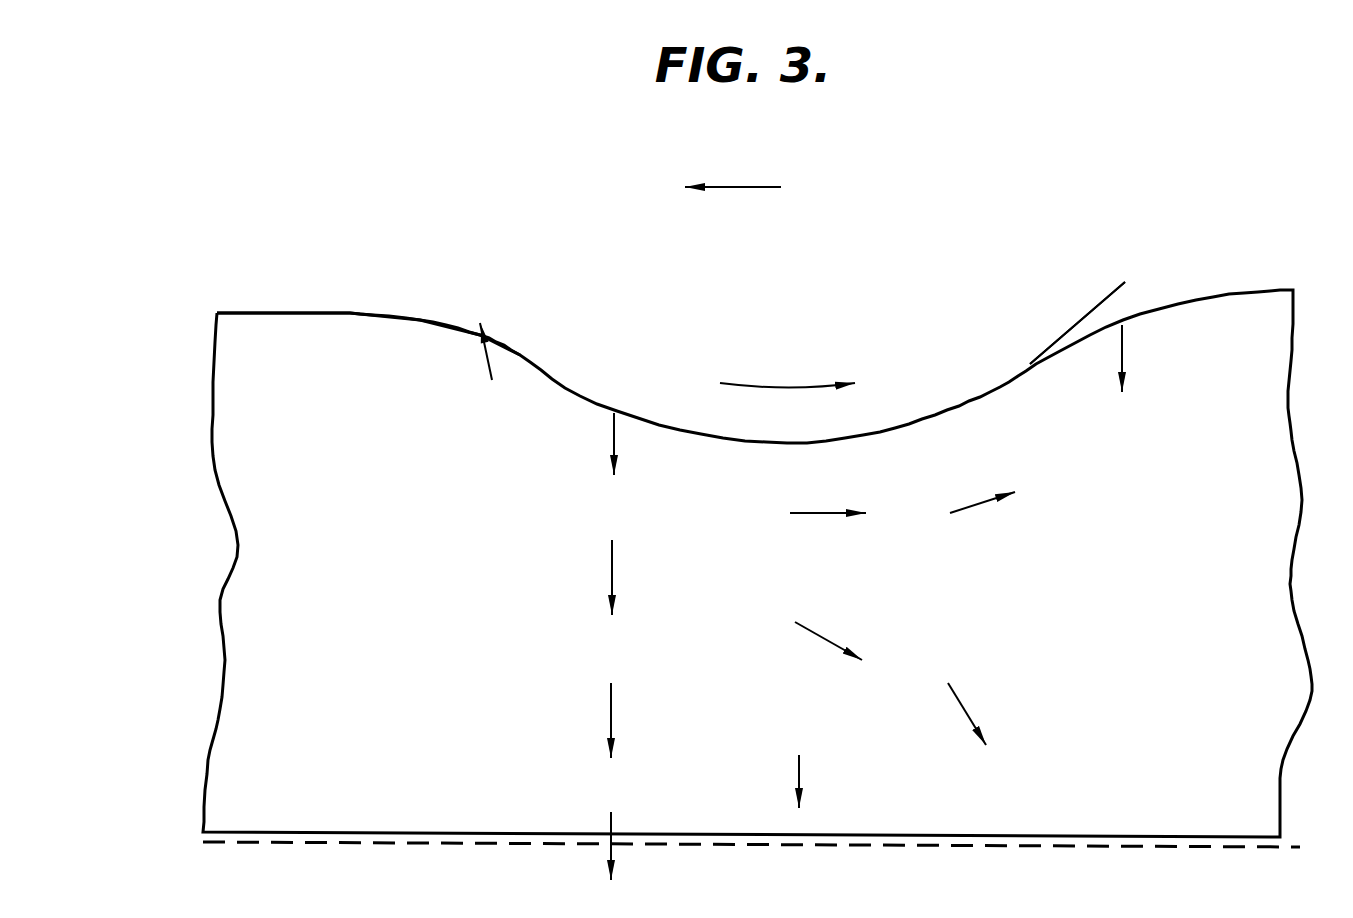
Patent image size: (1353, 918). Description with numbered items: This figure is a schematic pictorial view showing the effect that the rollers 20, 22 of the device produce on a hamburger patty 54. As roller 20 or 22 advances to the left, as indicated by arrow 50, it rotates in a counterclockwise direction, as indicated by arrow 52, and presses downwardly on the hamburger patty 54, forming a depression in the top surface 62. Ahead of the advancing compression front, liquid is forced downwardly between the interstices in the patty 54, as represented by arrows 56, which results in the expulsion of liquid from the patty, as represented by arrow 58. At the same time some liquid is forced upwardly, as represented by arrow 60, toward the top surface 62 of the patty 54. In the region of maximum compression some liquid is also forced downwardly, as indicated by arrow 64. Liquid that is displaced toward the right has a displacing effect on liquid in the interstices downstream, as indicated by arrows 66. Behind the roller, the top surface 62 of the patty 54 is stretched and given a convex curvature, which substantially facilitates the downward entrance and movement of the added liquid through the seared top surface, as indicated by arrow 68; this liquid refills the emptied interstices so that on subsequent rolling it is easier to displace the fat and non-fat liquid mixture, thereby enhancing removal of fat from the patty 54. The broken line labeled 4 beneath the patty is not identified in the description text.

The section line for FIG. 4 is at (1237, 850).
The roller 20 is at (1108, 298).
The roller 22 is at (1077, 323).
The arrow 50 is at (737, 185).
The arrow 52 is at (781, 381).
The hamburger patty 54 is at (1283, 461).
The arrows 56 is at (610, 440).
The arrow 58 is at (608, 708).
The arrow 60 is at (485, 355).
The top surface 62 is at (348, 311).
The arrow 64 is at (805, 770).
The arrows 66 is at (978, 505).
The arrow 68 is at (1128, 355).